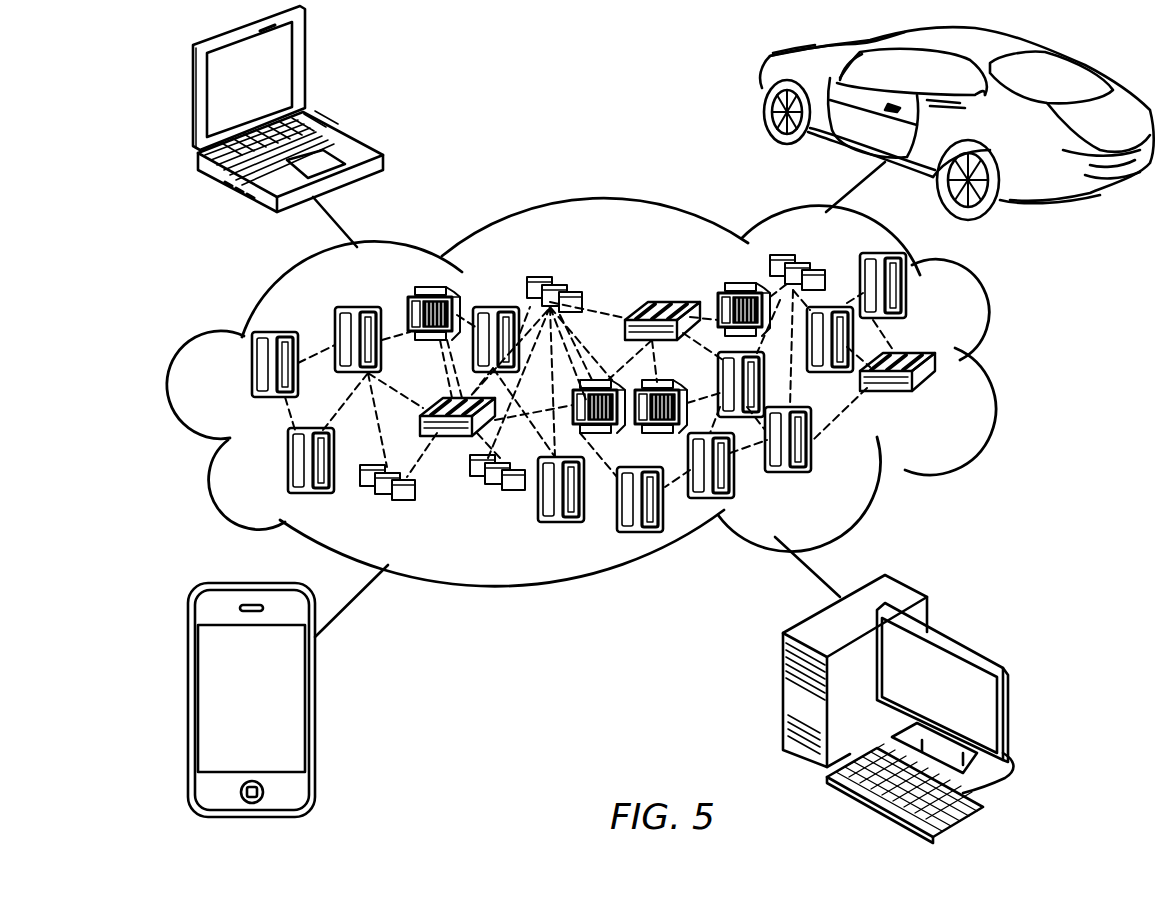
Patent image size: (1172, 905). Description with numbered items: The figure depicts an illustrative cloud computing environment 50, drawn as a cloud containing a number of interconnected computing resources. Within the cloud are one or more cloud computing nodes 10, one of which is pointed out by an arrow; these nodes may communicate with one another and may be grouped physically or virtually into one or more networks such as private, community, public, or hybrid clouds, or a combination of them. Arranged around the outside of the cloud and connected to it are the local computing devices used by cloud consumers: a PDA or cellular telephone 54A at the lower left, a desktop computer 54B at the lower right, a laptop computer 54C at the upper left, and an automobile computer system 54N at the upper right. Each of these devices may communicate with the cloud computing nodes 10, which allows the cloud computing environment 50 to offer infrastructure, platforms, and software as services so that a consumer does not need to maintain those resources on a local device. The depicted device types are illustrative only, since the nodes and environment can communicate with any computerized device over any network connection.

The cloud computing node 10 is at (942, 385).
The cloud computing environment 50 is at (987, 325).
The PDA or cellular telephone 54A is at (317, 692).
The desktop computer 54B is at (783, 667).
The laptop computer 54C is at (305, 78).
The automobile computer system 54N is at (762, 82).